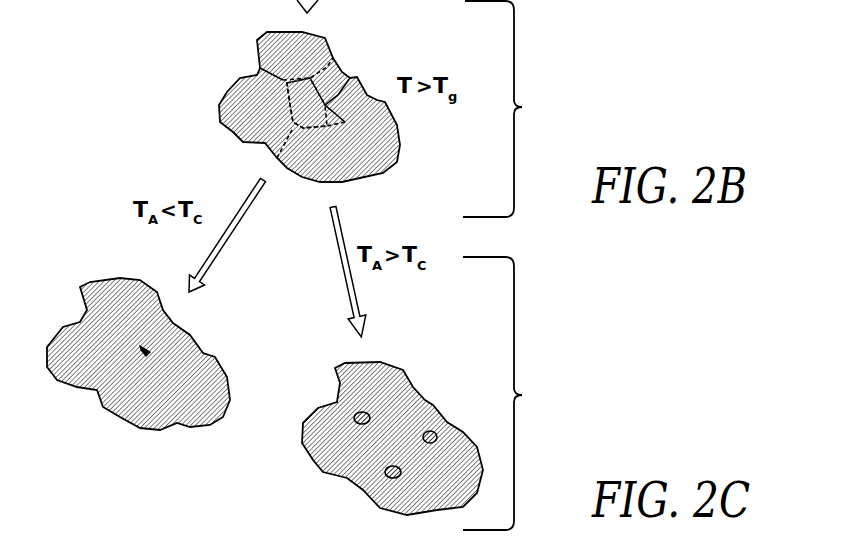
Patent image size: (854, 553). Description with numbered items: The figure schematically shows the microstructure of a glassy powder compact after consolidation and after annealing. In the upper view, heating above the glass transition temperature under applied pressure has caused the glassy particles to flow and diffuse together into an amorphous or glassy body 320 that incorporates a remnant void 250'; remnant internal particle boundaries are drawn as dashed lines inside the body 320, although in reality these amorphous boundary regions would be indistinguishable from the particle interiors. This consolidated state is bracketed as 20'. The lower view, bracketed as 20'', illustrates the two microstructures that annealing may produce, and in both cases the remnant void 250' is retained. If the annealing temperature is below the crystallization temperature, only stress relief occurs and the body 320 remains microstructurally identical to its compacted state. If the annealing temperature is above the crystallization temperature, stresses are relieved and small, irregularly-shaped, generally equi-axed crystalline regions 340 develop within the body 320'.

In FIG. 2B, the composite material above glass transition temperature 20' is at (562, 109).
In FIG. 2C, the annealed composite material 20'' is at (565, 393).
In FIG. 2B, the amorphous or glassy body 320 is at (323, 99).
In FIG. 2C, the amorphous or glassy body 320 is at (138, 368).
In FIG. 2C, the body 320' is at (378, 444).
In FIG. 2B, the remnant void 250' is at (242, 120).
In FIG. 2C, the remnant void 250' is at (271, 400).
In FIG. 2C, the crystalline regions 340 is at (398, 466).